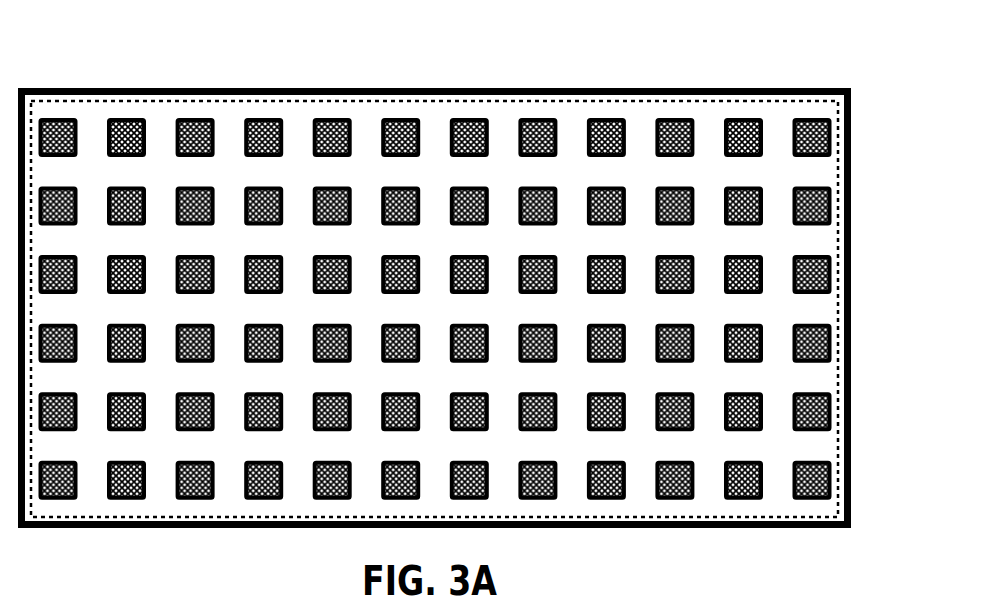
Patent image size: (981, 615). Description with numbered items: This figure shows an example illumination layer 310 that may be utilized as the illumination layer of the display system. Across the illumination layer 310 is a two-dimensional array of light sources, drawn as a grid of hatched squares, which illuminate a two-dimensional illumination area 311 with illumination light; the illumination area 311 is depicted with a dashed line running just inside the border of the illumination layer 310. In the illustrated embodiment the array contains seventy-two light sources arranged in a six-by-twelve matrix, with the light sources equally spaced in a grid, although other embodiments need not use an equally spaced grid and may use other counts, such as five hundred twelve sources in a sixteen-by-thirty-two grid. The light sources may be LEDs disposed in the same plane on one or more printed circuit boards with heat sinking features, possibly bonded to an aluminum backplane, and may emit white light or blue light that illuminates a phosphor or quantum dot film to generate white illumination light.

The illumination layer 310 is at (848, 88).
The two-dimensional illumination area 311 is at (628, 101).